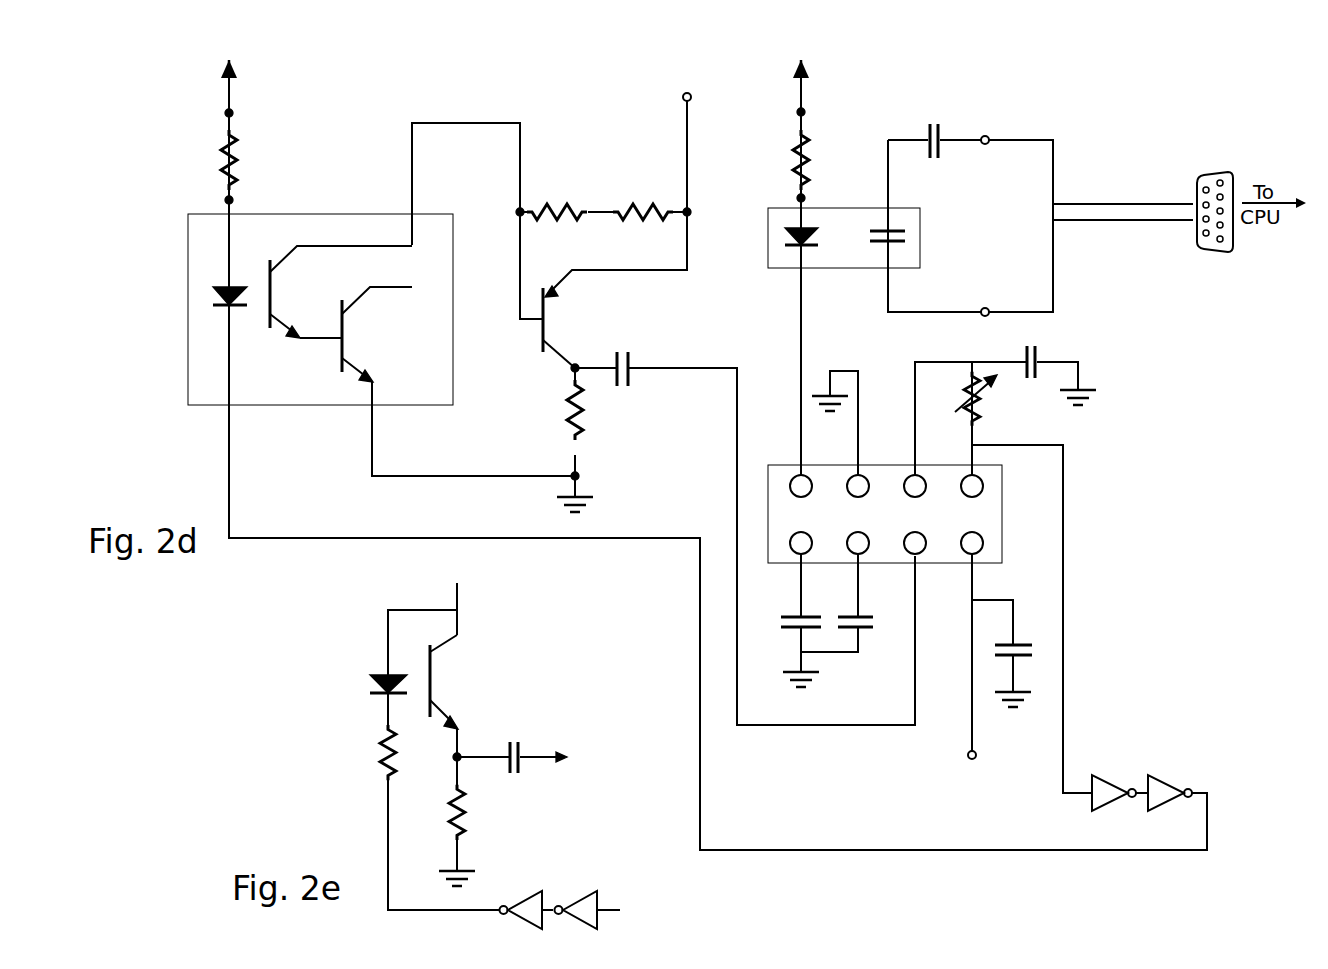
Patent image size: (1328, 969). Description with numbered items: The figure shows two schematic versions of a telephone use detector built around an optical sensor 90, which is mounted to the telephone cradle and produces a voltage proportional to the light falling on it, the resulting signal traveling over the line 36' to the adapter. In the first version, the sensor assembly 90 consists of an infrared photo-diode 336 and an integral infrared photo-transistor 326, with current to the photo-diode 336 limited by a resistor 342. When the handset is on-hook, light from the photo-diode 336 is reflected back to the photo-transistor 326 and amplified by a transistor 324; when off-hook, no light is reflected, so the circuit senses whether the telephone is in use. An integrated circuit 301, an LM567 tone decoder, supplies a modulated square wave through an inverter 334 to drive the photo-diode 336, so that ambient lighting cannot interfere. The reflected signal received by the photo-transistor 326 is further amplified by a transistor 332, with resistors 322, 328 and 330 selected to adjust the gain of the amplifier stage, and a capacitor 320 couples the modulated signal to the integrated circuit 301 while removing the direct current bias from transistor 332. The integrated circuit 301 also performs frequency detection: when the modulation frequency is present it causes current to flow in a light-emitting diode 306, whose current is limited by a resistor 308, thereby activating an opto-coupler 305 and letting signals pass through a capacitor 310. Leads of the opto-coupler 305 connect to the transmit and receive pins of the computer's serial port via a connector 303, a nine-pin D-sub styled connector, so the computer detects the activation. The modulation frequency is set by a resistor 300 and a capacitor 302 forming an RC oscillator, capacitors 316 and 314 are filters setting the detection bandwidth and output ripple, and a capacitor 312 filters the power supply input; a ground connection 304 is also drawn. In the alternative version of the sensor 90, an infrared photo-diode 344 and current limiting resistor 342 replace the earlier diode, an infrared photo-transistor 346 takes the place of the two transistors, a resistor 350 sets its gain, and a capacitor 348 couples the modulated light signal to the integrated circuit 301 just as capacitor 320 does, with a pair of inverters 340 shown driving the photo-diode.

In FIG. 2d, the optical sensor 90 is at (330, 173).
In FIG. 2d, the resistor 342 is at (220, 155).
In FIG. 2e, the resistor 342 is at (380, 762).
In FIG. 2d, the infrared photo-diode 336 is at (212, 290).
In FIG. 2d, the infrared photo-transistor 326 is at (268, 327).
In FIG. 2d, the transistor 324 is at (340, 366).
In FIG. 2d, the resistor 328 is at (548, 205).
In FIG. 2d, the resistor 330 is at (633, 205).
In FIG. 2d, the transistor 332 is at (546, 332).
In FIG. 2d, the resistor 322 is at (563, 413).
In FIG. 2d, the capacitor 320 is at (628, 390).
In FIG. 2d, the resistor 308 is at (792, 150).
In FIG. 2d, the light-emitting diode 306 is at (783, 228).
In FIG. 2d, the opto-coupler 305 is at (907, 232).
In FIG. 2d, the capacitor 310 is at (928, 122).
In FIG. 2d, the line 36' is at (1095, 182).
In FIG. 2d, the connector 303 is at (1220, 170).
In FIG. 2d, the ground connection 304 is at (835, 371).
In FIG. 2d, the capacitor 302 is at (1040, 348).
In FIG. 2d, the resistor 300 is at (983, 415).
In FIG. 2d, the integrated circuit 301 is at (993, 512).
In FIG. 2d, the capacitor 312 is at (1013, 610).
In FIG. 2d, the capacitor 316 is at (782, 630).
In FIG. 2d, the capacitor 314 is at (858, 597).
In FIG. 2d, the inverter 334 is at (1102, 777).
In FIG. 2e, the infrared photo-diode 344 is at (373, 677).
In FIG. 2e, the infrared photo-transistor 346 is at (433, 677).
In FIG. 2e, the capacitor 348 is at (522, 743).
In FIG. 2e, the resistor 350 is at (467, 808).
In FIG. 2e, the inverter pair 340 is at (540, 892).